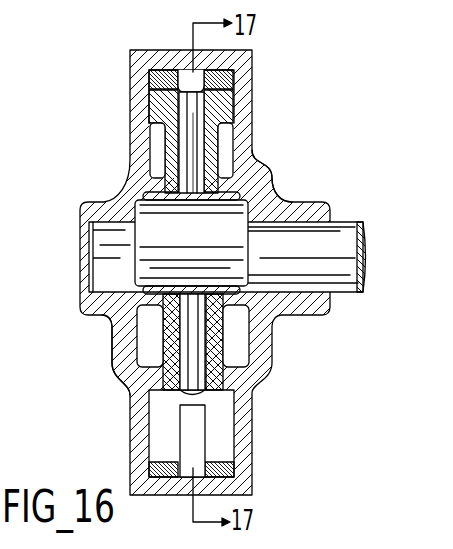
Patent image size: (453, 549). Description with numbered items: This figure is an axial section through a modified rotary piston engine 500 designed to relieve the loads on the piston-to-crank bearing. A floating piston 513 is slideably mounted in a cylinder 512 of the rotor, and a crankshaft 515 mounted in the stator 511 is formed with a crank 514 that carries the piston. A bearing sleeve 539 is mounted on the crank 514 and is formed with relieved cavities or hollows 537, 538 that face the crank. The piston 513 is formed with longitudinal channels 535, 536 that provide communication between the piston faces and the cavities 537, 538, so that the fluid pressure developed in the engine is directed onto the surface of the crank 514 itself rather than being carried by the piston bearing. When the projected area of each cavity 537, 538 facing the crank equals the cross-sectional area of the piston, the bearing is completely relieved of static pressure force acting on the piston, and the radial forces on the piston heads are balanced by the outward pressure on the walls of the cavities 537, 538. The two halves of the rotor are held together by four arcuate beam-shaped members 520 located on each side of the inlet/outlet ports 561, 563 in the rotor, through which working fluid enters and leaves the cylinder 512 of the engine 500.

The rotary piston engine 500 is at (306, 47).
The stator 511 is at (133, 62).
The cylinder 512 is at (148, 413).
The floating piston 513 is at (152, 110).
The crank 514 is at (208, 239).
The crankshaft 515 is at (102, 247).
The arcuate beam-shaped members 520 is at (160, 83).
The longitudinal channel 535 is at (215, 130).
The longitudinal channel 536 is at (196, 333).
The relieved cavity 537 is at (267, 177).
The relieved cavity 538 is at (113, 320).
The bearing sleeve 539 is at (140, 188).
The inlet/outlet port 561 is at (185, 73).
The inlet/outlet port 563 is at (186, 470).